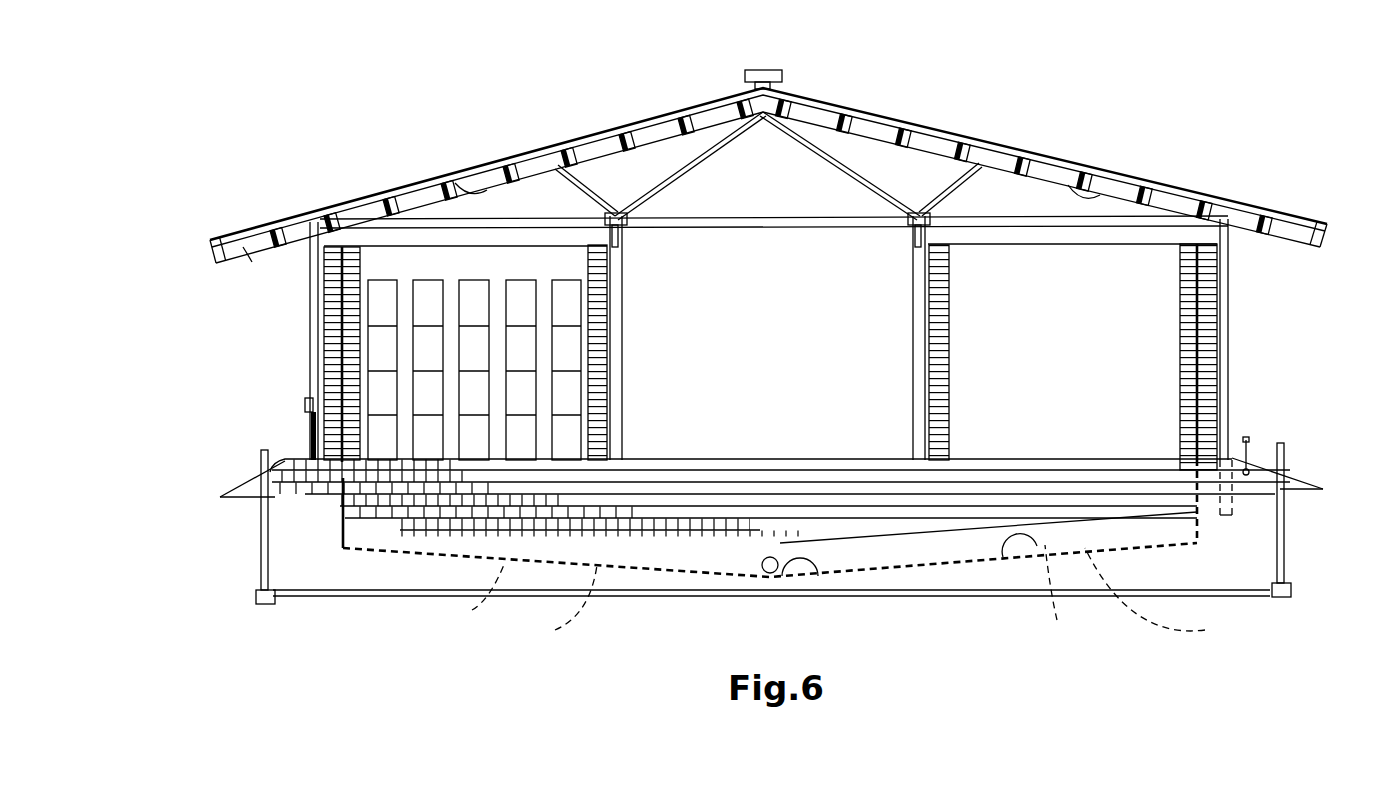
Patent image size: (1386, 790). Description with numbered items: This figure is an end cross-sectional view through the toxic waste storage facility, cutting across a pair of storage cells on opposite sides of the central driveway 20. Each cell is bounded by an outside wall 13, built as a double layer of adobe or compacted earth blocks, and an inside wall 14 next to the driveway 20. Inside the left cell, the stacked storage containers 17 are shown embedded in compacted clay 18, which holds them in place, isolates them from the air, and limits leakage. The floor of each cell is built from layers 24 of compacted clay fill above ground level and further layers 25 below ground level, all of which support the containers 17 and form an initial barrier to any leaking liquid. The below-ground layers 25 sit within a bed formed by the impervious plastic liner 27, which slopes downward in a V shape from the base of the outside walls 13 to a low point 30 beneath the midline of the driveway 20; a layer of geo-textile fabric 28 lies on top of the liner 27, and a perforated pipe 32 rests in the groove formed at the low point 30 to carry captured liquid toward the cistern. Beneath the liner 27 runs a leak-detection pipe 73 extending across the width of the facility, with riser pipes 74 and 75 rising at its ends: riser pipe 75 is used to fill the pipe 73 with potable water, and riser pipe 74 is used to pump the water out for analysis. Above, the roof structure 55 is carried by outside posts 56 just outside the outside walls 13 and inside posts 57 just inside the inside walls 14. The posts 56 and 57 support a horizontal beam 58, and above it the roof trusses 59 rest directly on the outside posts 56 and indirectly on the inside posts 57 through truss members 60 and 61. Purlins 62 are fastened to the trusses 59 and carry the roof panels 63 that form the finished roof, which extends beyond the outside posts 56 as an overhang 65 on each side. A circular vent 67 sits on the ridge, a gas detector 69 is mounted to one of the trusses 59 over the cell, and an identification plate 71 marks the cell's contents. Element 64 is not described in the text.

The outside wall 13 is at (333, 383).
The inside wall 14 is at (600, 342).
The containers 17 is at (382, 303).
The compacted clay 18 is at (570, 262).
The driveway 20 is at (771, 414).
The layers of compacted clay fill 24 is at (980, 460).
The layers of compacted clay fill 25 is at (467, 522).
The impervious plastic liner 27 is at (336, 286).
The geo-textile fabric 28 is at (761, 596).
The low point 30 is at (817, 570).
The perforated pipe 32 is at (763, 573).
The roof structure 55 is at (1182, 166).
The support posts 56 is at (315, 355).
The support posts 57 is at (617, 412).
The horizontal beam 58 is at (490, 218).
The roof trusses 59 is at (593, 152).
The truss member 60 is at (640, 195).
The truss member 61 is at (700, 157).
The purlins 62 is at (533, 148).
The roof panels 63 is at (423, 177).
The clip 64 is at (490, 168).
The eaves or overhang 65 is at (250, 255).
The circular vents 67 is at (765, 70).
The gas detector 69 is at (1108, 192).
The identification plate 71 is at (671, 366).
The perforated pipes 73 is at (638, 598).
The riser pipe 74 is at (262, 468).
The riser pipe 75 is at (1284, 455).